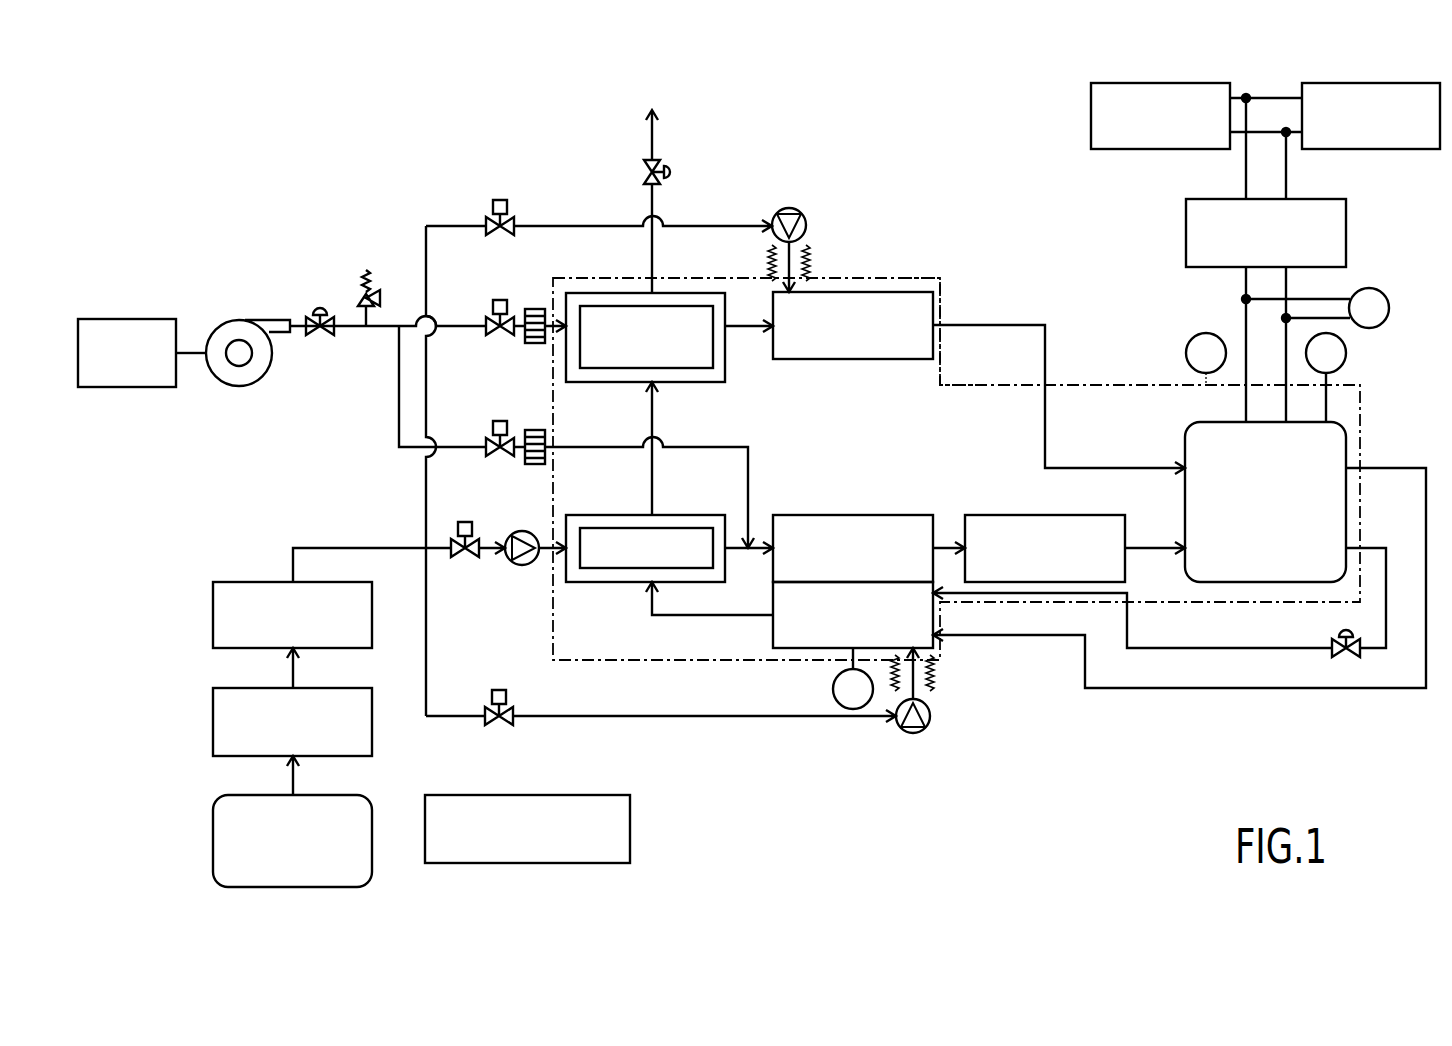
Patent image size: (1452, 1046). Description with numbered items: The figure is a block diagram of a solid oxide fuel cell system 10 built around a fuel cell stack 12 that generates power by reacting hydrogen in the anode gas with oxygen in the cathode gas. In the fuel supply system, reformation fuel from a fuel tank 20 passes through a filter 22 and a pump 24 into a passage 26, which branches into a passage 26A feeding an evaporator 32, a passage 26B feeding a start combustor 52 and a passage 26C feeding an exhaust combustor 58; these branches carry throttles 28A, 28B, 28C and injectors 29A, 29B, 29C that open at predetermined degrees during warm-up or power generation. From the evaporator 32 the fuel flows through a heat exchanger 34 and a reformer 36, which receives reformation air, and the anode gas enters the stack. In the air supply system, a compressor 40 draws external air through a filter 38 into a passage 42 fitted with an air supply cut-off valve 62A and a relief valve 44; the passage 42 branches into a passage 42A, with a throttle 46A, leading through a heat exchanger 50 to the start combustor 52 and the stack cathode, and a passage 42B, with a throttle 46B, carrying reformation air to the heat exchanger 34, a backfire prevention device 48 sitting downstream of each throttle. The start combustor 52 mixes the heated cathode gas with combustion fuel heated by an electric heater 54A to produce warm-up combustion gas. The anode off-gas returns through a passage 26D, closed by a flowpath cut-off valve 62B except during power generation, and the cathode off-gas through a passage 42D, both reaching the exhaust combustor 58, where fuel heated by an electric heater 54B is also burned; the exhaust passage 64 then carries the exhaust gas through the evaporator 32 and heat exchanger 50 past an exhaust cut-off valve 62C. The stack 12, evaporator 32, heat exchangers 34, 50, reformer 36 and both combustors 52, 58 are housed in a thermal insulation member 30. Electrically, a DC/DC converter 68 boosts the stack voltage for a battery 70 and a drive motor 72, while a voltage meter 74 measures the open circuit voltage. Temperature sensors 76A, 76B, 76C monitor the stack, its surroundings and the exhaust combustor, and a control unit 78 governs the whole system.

The fuel cell system 10 is at (779, 98).
The fuel cell stack 12 is at (1265, 502).
The fuel tank 20 is at (212, 843).
The filter 22 is at (212, 721).
The pump 24 is at (212, 613).
The passage 26 is at (299, 547).
The passage 26A is at (440, 550).
The passage 26B is at (446, 226).
The passage 26C is at (554, 718).
The passage 26D is at (1271, 689).
The throttle 28A is at (464, 522).
The throttle 28B is at (498, 200).
The throttle 28C is at (496, 690).
The injector 29A is at (518, 565).
The injector 29B is at (800, 214).
The injector 29C is at (910, 733).
The thermal insulation member 30 is at (915, 277).
The evaporator 32 is at (598, 514).
The heat exchanger 34 is at (811, 514).
The reformer 36 is at (996, 514).
The filter 38 is at (126, 388).
The compressor 40 is at (234, 386).
The passage 42 is at (349, 328).
The passage 42A is at (456, 325).
The passage 42B is at (592, 446).
The passage 42D is at (1397, 467).
The relief valve 44 is at (364, 272).
The throttle 46A is at (497, 299).
The throttle 46B is at (497, 420).
The backfire prevention device 48 is at (534, 309).
The heat exchanger 50 is at (592, 305).
The start combustor 52 is at (856, 291).
The electric heater 54A is at (770, 255).
The electric heater 54B is at (932, 688).
The exhaust combustor 58 is at (797, 649).
The air supply cut-off valve 62A is at (318, 310).
The flowpath cut-off valve 62B is at (1349, 665).
The exhaust cut-off valve 62C is at (670, 174).
The exhaust passage 64 is at (654, 132).
The DC/DC converter 68 is at (1185, 230).
The battery 70 is at (1090, 114).
The drive motor 72 is at (1411, 150).
The voltage meter 74 is at (1390, 308).
The temperature sensor 76A is at (1347, 355).
The temperature sensor 76B is at (1185, 353).
The temperature sensor 76C is at (837, 710).
The control unit 78 is at (448, 795).